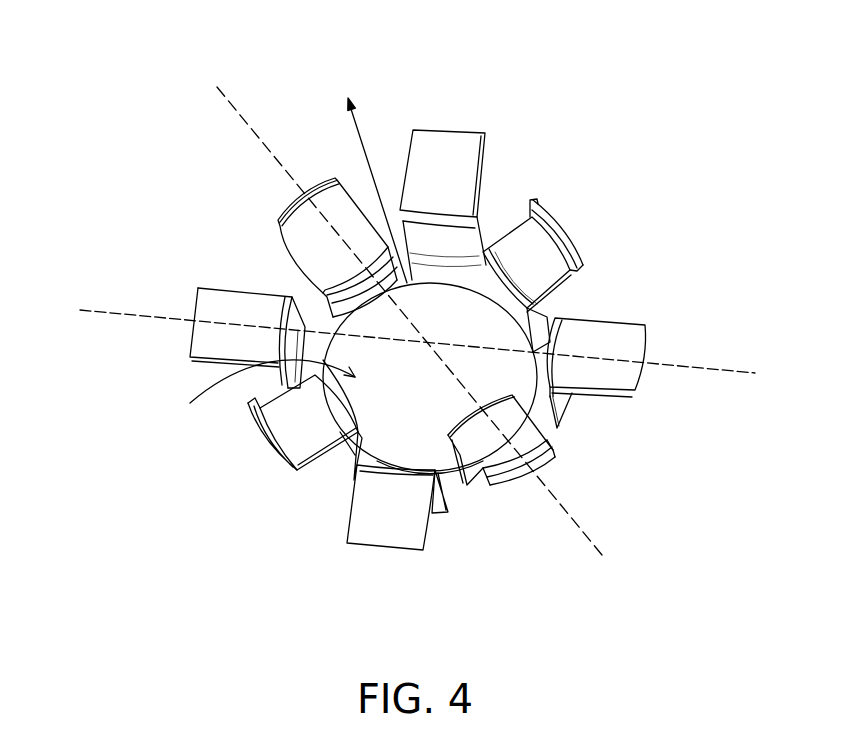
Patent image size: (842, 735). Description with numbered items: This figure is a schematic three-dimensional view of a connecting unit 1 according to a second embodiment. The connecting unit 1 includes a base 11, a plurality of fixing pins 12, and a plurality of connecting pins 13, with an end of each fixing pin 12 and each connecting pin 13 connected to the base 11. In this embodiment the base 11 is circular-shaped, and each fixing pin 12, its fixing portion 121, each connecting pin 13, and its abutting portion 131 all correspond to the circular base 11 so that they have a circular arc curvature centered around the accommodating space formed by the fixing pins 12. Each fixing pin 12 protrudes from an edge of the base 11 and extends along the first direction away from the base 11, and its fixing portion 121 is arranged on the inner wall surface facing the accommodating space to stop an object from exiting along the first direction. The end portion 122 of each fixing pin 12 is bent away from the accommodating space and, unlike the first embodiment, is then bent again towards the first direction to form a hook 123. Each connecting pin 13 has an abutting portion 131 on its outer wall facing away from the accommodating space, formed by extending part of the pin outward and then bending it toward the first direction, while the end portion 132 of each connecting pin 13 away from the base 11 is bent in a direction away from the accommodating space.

The connecting unit 1 is at (110, 82).
The base 11 is at (432, 447).
The fixing pin 12 is at (566, 253).
The fixing portion 121 is at (540, 307).
The end portion 122 is at (515, 237).
The hook 123 is at (567, 233).
The connecting pin 13 is at (628, 373).
The abutting portion 131 is at (568, 410).
The end portion 132 is at (627, 380).